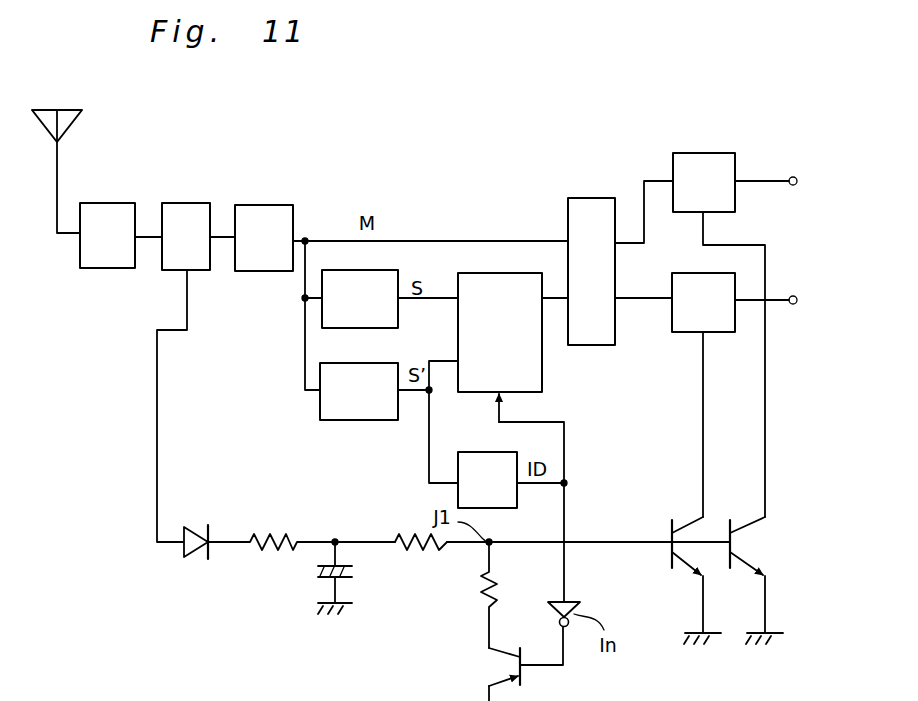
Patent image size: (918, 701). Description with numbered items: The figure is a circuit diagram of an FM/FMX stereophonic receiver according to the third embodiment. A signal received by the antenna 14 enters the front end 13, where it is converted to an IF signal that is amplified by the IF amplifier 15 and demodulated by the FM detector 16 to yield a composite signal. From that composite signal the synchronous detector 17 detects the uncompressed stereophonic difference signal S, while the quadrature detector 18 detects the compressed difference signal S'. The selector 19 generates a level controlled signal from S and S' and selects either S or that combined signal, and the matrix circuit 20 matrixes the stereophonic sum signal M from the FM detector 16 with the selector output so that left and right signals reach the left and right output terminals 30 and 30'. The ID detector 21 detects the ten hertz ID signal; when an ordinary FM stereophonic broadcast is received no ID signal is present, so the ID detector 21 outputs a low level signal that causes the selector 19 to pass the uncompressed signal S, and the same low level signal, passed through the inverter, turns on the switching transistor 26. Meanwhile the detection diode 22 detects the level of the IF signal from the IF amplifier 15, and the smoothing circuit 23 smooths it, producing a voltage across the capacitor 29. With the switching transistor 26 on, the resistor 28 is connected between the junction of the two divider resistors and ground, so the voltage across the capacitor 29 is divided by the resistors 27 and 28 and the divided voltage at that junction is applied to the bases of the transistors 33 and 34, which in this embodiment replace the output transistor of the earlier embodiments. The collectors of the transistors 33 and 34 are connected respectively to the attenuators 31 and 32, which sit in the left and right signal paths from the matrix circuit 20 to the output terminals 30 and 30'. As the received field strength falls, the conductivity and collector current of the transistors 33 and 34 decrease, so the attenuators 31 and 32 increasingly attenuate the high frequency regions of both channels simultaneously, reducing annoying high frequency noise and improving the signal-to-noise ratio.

The front end 13 is at (98, 203).
The antenna 14 is at (80, 115).
The IF amplifier 15 is at (178, 203).
The FM detector 16 is at (262, 205).
The synchronous detector 17 is at (350, 270).
The quadrature detector 18 is at (340, 420).
The selector 19 is at (490, 273).
The matrix circuit 20 is at (590, 198).
The ID detector 21 is at (483, 452).
The detection diode 22 is at (196, 524).
The smoothing circuit 23 is at (211, 599).
The switching transistor 26 is at (514, 661).
The potential resistor 27 is at (420, 552).
The potential resistor 28 is at (485, 592).
The capacitor 29 is at (320, 570).
The left output terminal 30 is at (766, 133).
The right output terminal 30' is at (769, 348).
The attenuator 31 is at (672, 322).
The attenuator 32 is at (697, 153).
The transistor 33 is at (688, 527).
The transistor 34 is at (742, 540).